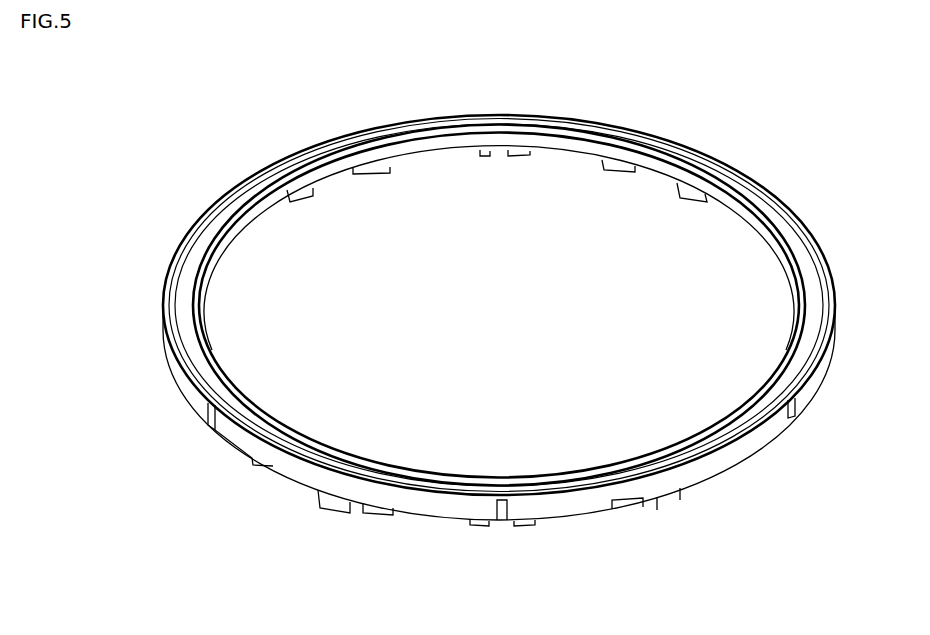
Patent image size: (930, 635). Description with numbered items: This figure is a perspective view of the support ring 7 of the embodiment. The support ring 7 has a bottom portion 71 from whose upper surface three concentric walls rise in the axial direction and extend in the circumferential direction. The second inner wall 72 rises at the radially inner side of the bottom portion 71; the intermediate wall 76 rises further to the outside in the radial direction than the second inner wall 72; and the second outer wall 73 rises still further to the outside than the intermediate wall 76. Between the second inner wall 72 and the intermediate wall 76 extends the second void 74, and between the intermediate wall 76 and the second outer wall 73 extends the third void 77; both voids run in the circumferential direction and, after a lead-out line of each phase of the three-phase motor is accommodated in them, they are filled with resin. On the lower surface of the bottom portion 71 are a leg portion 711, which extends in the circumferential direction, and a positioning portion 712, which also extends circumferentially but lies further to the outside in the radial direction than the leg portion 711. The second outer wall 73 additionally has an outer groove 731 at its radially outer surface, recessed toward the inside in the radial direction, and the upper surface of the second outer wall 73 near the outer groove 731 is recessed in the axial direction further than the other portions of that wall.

The support ring 7 is at (283, 143).
The bottom portion 71 is at (820, 317).
The leg portion 711 is at (383, 511).
The positioning portion 712 is at (330, 503).
The second inner wall 72 is at (253, 207).
The second outer wall 73 is at (187, 380).
The outer groove 731 is at (503, 527).
The second void 74 is at (187, 310).
The intermediate wall 76 is at (252, 178).
The third void 77 is at (177, 320).